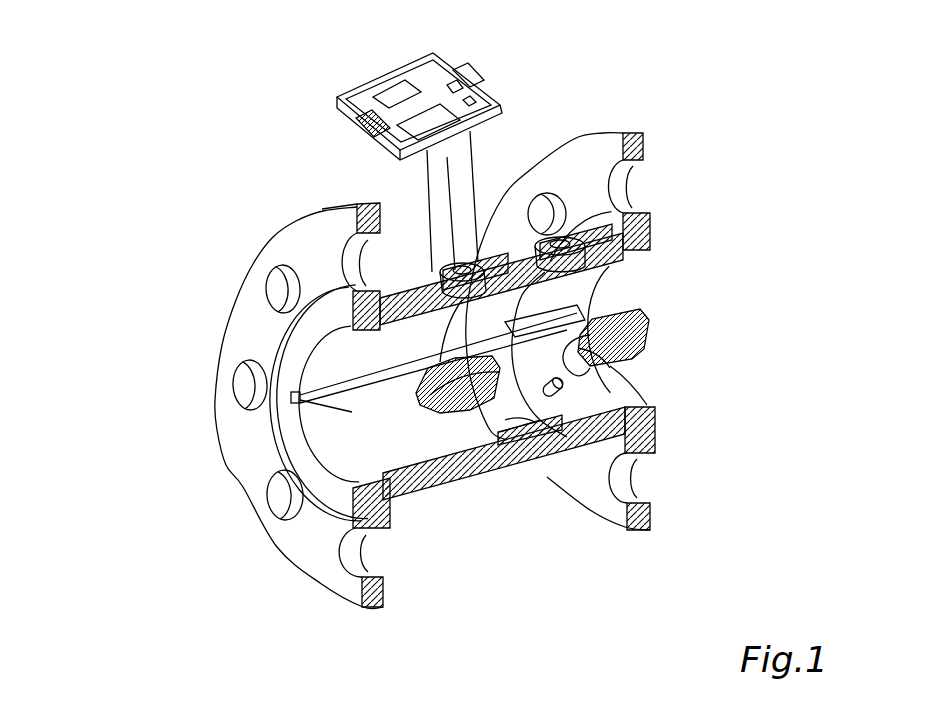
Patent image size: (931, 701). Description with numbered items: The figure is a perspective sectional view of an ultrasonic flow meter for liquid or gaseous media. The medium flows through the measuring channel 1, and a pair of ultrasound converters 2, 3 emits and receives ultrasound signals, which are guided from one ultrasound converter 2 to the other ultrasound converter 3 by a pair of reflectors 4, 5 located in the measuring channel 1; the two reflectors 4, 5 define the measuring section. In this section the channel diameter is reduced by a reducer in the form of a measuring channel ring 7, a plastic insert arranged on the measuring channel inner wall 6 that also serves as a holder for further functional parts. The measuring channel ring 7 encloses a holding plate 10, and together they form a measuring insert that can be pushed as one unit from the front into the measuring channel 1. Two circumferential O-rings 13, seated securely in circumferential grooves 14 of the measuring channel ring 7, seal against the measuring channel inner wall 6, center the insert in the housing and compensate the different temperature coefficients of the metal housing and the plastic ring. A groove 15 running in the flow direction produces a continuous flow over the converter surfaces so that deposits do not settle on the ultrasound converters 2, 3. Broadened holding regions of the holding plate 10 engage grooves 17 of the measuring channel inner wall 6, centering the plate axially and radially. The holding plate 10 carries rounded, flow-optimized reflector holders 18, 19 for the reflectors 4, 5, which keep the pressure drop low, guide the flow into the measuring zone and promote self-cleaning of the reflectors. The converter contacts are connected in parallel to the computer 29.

The measuring channel 1 is at (636, 282).
The ultrasound converter 2 is at (470, 307).
The ultrasound converter 3 is at (600, 273).
The reflector 4 is at (436, 393).
The reflector 5 is at (580, 350).
The measuring channel inner wall 6 is at (327, 363).
The measuring channel ring 7 is at (520, 410).
The holding plate 10 is at (345, 398).
The O-rings 13 is at (520, 407).
The circumferential grooves 14 is at (548, 287).
The groove 15 is at (556, 287).
The grooves 17 is at (307, 390).
The reflector holder 18 is at (430, 400).
The reflector holder 19 is at (617, 330).
The computer 29 is at (433, 65).